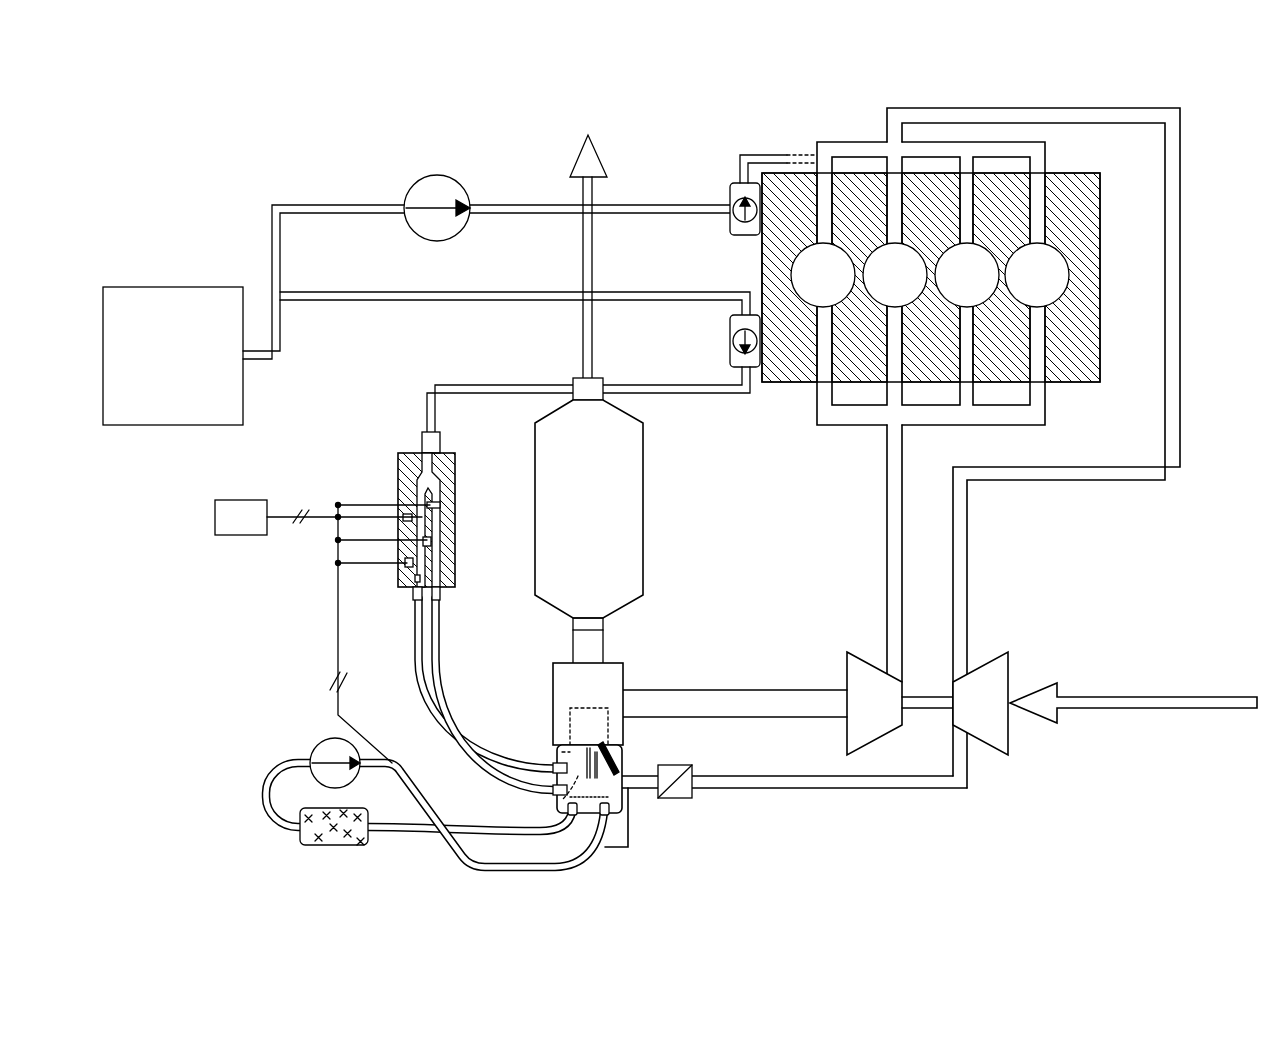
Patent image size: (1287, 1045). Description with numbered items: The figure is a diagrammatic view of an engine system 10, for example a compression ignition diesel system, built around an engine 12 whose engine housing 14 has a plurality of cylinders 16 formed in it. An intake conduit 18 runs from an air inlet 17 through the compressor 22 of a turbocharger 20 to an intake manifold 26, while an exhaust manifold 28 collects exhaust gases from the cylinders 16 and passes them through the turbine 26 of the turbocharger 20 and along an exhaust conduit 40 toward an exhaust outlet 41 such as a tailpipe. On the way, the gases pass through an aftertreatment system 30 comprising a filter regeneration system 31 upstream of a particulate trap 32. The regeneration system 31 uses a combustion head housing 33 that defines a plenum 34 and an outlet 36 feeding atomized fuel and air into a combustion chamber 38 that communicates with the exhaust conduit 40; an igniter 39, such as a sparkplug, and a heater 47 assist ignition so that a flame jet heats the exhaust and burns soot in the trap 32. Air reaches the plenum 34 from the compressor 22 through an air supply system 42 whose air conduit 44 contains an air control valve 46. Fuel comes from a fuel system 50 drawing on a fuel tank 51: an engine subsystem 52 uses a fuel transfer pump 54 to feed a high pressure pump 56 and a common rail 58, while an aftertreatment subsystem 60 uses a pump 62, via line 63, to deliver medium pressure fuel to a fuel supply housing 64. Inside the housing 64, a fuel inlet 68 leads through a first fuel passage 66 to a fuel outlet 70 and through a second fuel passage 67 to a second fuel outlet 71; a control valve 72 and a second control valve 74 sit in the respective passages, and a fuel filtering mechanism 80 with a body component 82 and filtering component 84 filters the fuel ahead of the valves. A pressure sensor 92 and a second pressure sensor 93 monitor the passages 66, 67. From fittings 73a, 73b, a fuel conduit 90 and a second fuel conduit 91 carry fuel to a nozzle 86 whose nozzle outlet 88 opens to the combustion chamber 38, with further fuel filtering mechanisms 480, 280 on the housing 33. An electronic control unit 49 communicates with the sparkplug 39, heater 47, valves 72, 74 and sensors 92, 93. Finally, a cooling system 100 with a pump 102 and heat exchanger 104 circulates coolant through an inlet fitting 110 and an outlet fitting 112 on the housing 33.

The engine system 10 is at (1242, 140).
The engine 12 is at (956, 455).
The engine housing 14 is at (1100, 348).
The cylinders 16 is at (1062, 273).
The air inlet 17 is at (1225, 710).
The intake conduit 18 is at (1181, 466).
The turbocharger 20 is at (949, 703).
The compressor 22 is at (992, 753).
The intake manifold 26 is at (1040, 148).
The exhaust manifold 28 is at (905, 440).
The aftertreatment system 30 is at (336, 625).
The filter regeneration system 31 is at (640, 797).
The particulate filter or trap 32 is at (643, 528).
The combustion head housing 33 is at (621, 748).
The plenum 34 is at (550, 745).
The outlet 36 is at (605, 733).
The combustion chamber 38 is at (623, 705).
The igniter 39 is at (623, 760).
The exhaust conduit 40 is at (604, 658).
The exhaust outlet 41 is at (578, 153).
The air supply system 42 is at (868, 792).
The air conduit 44 is at (932, 790).
The air control valve 46 is at (680, 798).
The heater 47 is at (650, 772).
The electronic control unit 49 is at (233, 535).
The fuel system 50 is at (283, 195).
The fuel tank 51 is at (143, 427).
The engine subsystem 52 is at (460, 286).
The fuel transfer pump 54 is at (453, 177).
The high pressure pump 56 is at (746, 237).
The common rail 58 is at (763, 152).
The aftertreatment subsystem 60 is at (415, 491).
The pump 62 is at (730, 331).
The fuel return line 63 is at (490, 384).
The fuel supply housing 64 is at (398, 487).
The fuel passage 66 is at (415, 579).
The second fuel passage 67 is at (441, 560).
The fuel inlet 68 is at (418, 453).
The fuel outlet 70 is at (413, 595).
The second fuel outlet 71 is at (442, 595).
The control valve 72 is at (440, 515).
The fitting 73a is at (417, 608).
The fitting 73b is at (437, 608).
The second control valve 74 is at (440, 505).
The fuel filtering mechanism 80 is at (443, 438).
The body component 82 is at (422, 433).
The filtering component 84 is at (455, 460).
The nozzle 86 is at (572, 790).
The nozzle outlet 88 is at (580, 744).
The fuel conduit 90 is at (413, 687).
The second fuel conduit 91 is at (447, 690).
The pressure sensor 92 is at (380, 547).
The second pressure sensor 93 is at (432, 540).
The cooling system 100 is at (436, 813).
The pump 102 is at (312, 750).
The heat exchanger 104 is at (333, 845).
The inlet fitting 110 is at (577, 820).
The outlet fitting 112 is at (609, 820).
The fuel filtering mechanism 280 is at (553, 791).
The fuel filtering mechanism 480 is at (552, 764).